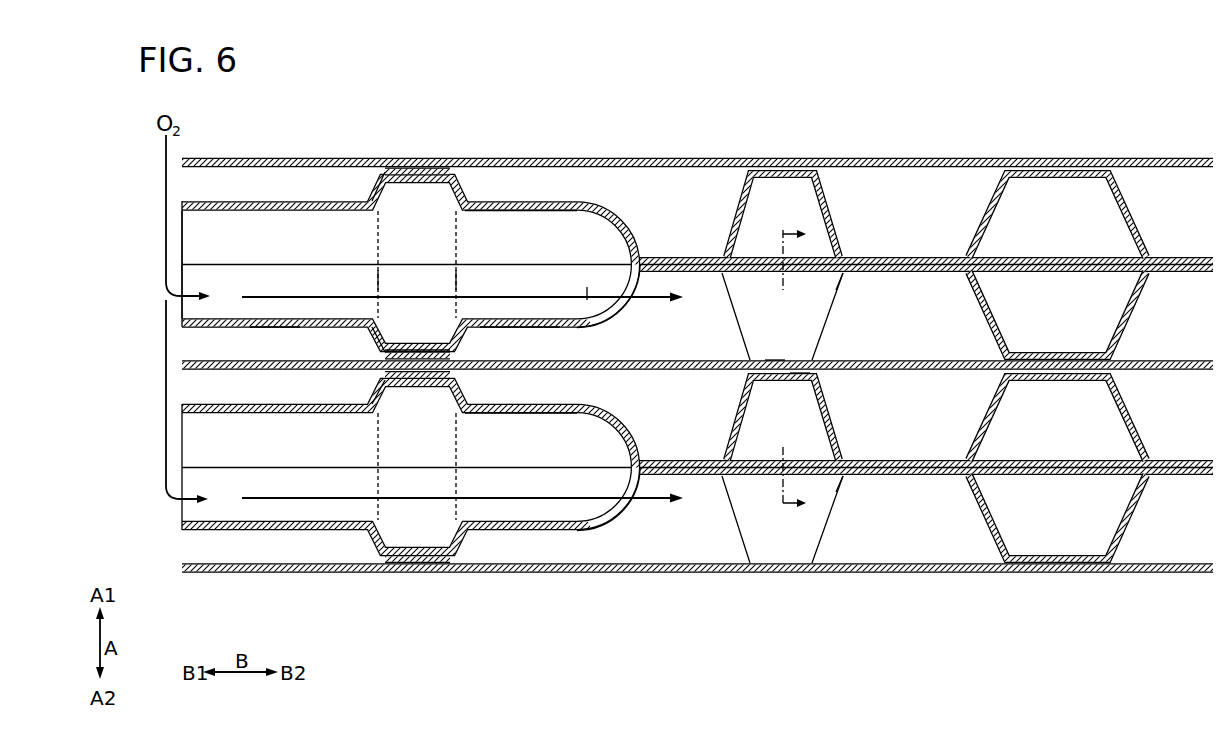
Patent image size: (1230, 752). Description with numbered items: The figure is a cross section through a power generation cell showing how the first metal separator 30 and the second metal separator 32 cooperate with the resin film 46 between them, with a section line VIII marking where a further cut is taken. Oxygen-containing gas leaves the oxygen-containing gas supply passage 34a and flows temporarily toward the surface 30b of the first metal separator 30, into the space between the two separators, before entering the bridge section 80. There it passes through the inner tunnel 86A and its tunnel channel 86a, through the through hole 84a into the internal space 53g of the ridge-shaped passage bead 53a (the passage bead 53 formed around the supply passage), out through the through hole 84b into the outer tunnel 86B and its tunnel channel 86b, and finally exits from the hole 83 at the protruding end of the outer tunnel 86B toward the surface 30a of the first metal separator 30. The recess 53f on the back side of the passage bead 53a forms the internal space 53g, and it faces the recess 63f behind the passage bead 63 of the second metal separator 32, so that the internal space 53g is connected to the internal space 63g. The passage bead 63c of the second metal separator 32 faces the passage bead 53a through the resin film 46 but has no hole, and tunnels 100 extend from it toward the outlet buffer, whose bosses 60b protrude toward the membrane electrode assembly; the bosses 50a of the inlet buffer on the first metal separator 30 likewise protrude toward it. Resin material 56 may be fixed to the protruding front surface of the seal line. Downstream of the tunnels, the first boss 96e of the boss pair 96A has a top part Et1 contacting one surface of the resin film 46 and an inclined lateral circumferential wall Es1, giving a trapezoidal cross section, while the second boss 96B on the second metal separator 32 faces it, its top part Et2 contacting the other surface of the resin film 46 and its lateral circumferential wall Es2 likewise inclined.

The first metal separator 30 is at (409, 367).
The surface of the first metal separator 30a is at (925, 343).
The surface of the first metal separator 30b is at (1177, 257).
The second metal separator 32 is at (258, 190).
The resin film 46 is at (316, 158).
The oxygen-containing gas supply passage 34a is at (158, 282).
The resin material 56 is at (422, 172).
The tunnel 100 is at (513, 203).
The passage bead 63 is at (329, 391).
The passage bead 63c is at (377, 392).
The recess 63f is at (335, 211).
The internal space 63g is at (400, 180).
The passage bead 53 is at (331, 341).
The passage bead 53a is at (377, 339).
The recess 53f is at (475, 310).
The internal space 53g is at (422, 345).
The through hole 84a is at (380, 281).
The through hole 84b is at (453, 290).
The tunnel channel 86a is at (192, 306).
The tunnel channel 86b is at (587, 287).
The inner tunnel 86A is at (262, 331).
The outer tunnel 86B is at (532, 333).
The hole 83 is at (630, 308).
The bridge section 80 is at (619, 337).
The boss pair 96A is at (784, 418).
The second boss 96B is at (723, 202).
The first boss 96e is at (817, 310).
The boss 60b is at (992, 208).
The boss 50a is at (983, 315).
The lateral circumferential wall Es1 is at (840, 285).
The lateral circumferential wall Es2 is at (833, 423).
The top part Et1 is at (798, 373).
The top part Et2 is at (775, 361).
The section line VIII is at (795, 368).